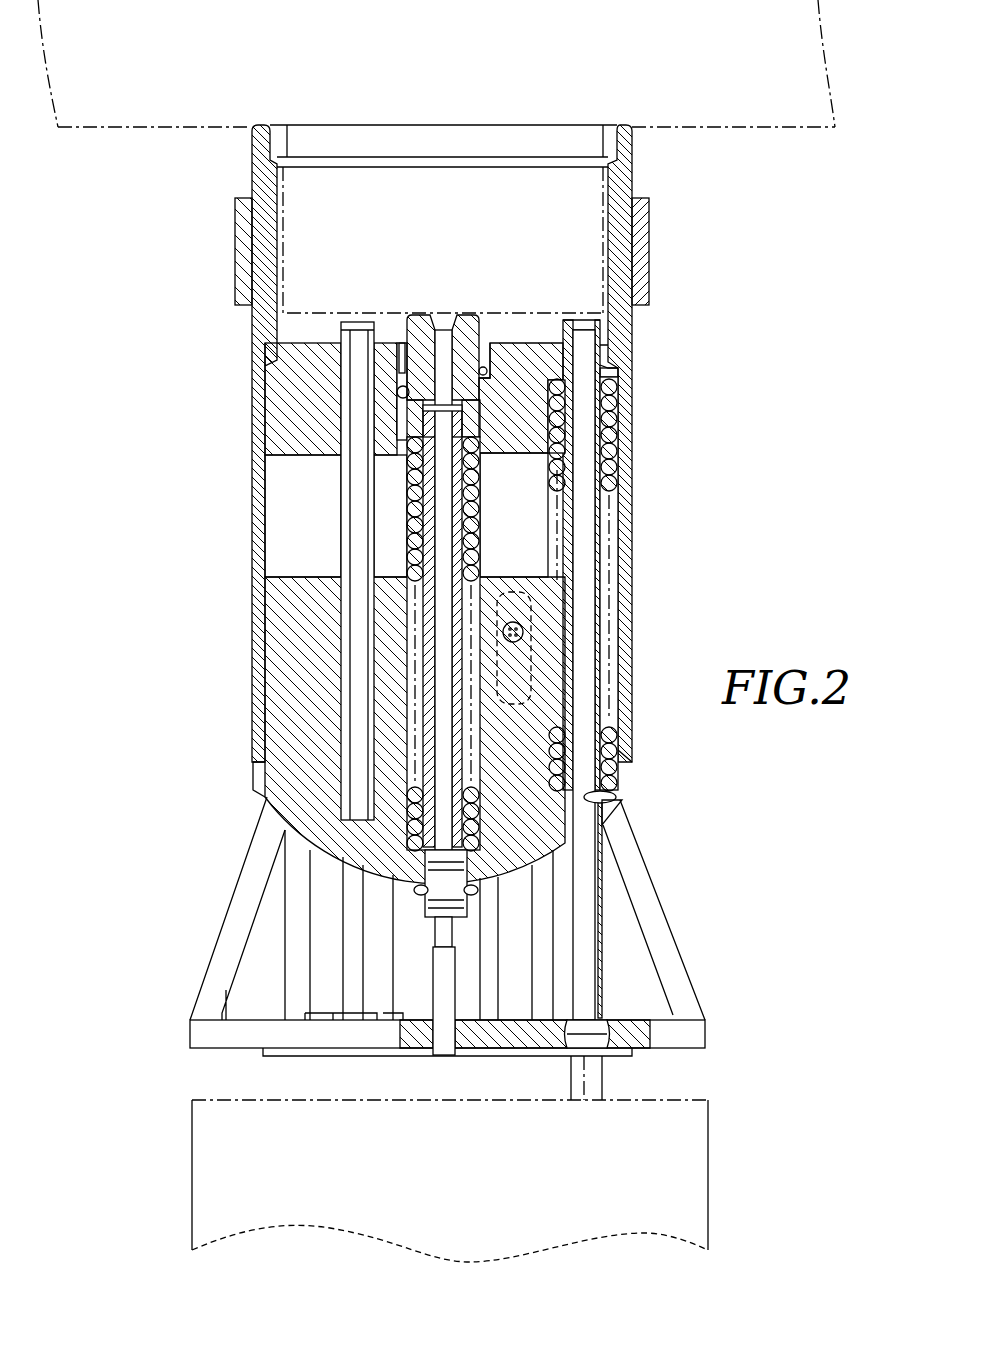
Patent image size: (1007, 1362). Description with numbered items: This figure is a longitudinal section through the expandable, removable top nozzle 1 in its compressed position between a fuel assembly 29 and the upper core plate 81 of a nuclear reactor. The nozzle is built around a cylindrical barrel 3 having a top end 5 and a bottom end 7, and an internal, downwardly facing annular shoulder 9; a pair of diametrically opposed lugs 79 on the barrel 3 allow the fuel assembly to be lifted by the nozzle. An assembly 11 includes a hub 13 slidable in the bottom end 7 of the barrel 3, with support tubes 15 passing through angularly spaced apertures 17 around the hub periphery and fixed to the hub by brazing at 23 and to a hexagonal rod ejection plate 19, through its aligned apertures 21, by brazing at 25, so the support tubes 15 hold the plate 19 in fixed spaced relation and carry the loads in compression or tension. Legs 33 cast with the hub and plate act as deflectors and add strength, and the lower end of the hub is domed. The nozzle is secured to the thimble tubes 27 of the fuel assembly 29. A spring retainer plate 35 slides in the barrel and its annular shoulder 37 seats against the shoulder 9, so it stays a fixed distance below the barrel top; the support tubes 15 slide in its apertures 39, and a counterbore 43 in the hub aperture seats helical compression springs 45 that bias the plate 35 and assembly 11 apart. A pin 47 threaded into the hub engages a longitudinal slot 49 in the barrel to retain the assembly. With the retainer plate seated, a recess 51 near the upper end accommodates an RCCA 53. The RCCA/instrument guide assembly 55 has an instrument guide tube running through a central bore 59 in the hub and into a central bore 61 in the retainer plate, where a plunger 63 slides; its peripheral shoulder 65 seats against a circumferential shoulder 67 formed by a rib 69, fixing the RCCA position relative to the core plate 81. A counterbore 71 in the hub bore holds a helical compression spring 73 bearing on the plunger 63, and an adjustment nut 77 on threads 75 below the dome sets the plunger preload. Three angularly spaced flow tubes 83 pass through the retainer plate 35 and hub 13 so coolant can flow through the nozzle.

The removable top nozzle 1 is at (696, 440).
The cylindrical barrel 3 is at (253, 352).
The first, top end 5 is at (630, 125).
The second bottom end 7 is at (630, 775).
The annular downwardly facing shoulder 9 is at (622, 378).
The assembly 11 is at (216, 786).
The hub 13 is at (265, 797).
The support tubes 15 is at (600, 893).
The apertures 17 is at (616, 797).
The rod ejection plate 19 is at (705, 1035).
The apertures 21 is at (571, 1060).
The brazing 23 is at (612, 812).
The brazing 25 is at (600, 1018).
The thimble tubes 27 is at (602, 1075).
The fuel assembly 29 is at (708, 1185).
The legs 33 is at (330, 898).
The spring retainer plate 35 is at (268, 400).
The annular shoulder 37 is at (265, 355).
The apertures 39 is at (588, 333).
The counterbore 43 is at (612, 655).
The helical compression springs 45 is at (612, 492).
The pin 47 is at (518, 700).
The longitudinal slot 49 is at (508, 568).
The recess 51 is at (283, 192).
The RCCA 53 is at (600, 197).
The RCCA/instrument guide assembly 55 is at (384, 505).
The central bore 59 is at (432, 884).
The central bore 61 is at (395, 392).
The plunger 63 is at (476, 318).
The annular peripheral shoulder 65 is at (486, 374).
The circumferential shoulder 67 is at (490, 345).
The rib 69 is at (400, 343).
The counterbore 71 is at (463, 738).
The helical compression spring 73 is at (480, 522).
The threads 75 is at (468, 900).
The adjustment nut 77 is at (425, 896).
The lugs 79 is at (235, 248).
The upper core plate 81 is at (832, 72).
The flow tubes 83 is at (335, 683).